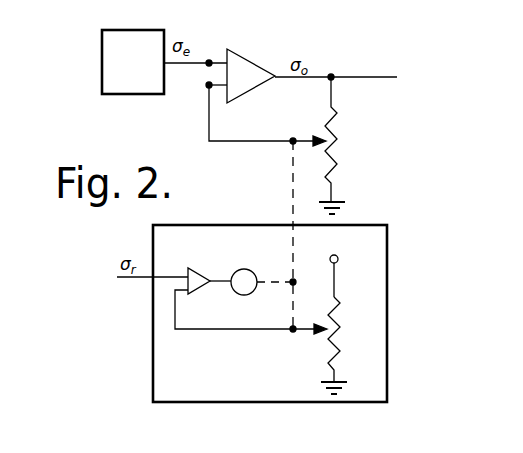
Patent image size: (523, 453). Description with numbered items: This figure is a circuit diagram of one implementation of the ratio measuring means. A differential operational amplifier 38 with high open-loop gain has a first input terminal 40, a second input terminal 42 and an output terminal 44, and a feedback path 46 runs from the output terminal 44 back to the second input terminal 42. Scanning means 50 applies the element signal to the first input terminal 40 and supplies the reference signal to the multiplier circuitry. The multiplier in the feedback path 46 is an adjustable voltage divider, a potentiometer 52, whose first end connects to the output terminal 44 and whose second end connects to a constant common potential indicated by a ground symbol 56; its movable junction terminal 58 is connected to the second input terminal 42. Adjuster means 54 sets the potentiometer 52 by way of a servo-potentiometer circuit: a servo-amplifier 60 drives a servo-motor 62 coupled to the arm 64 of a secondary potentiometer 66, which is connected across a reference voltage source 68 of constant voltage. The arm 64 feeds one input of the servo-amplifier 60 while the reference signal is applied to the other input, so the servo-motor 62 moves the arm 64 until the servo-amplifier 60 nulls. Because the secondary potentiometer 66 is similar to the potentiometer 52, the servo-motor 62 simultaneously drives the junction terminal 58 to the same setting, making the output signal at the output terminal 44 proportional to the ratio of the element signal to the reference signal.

The differential operational amplifier 38 is at (258, 66).
The first input terminal 40 is at (203, 70).
The second input terminal 42 is at (205, 92).
The output terminal 44 is at (331, 77).
The feedback path 46 is at (209, 118).
The scanning means 50 is at (146, 81).
The potentiometer 52 is at (343, 125).
The adjuster means 54 is at (153, 360).
The ground symbol 56 is at (342, 201).
The junction terminal 58 is at (322, 136).
The servo-amplifier 60 is at (208, 277).
The servo-motor 62 is at (252, 270).
The arm 64 is at (322, 333).
The secondary potentiometer 66 is at (340, 312).
The reference voltage source 68 is at (338, 257).